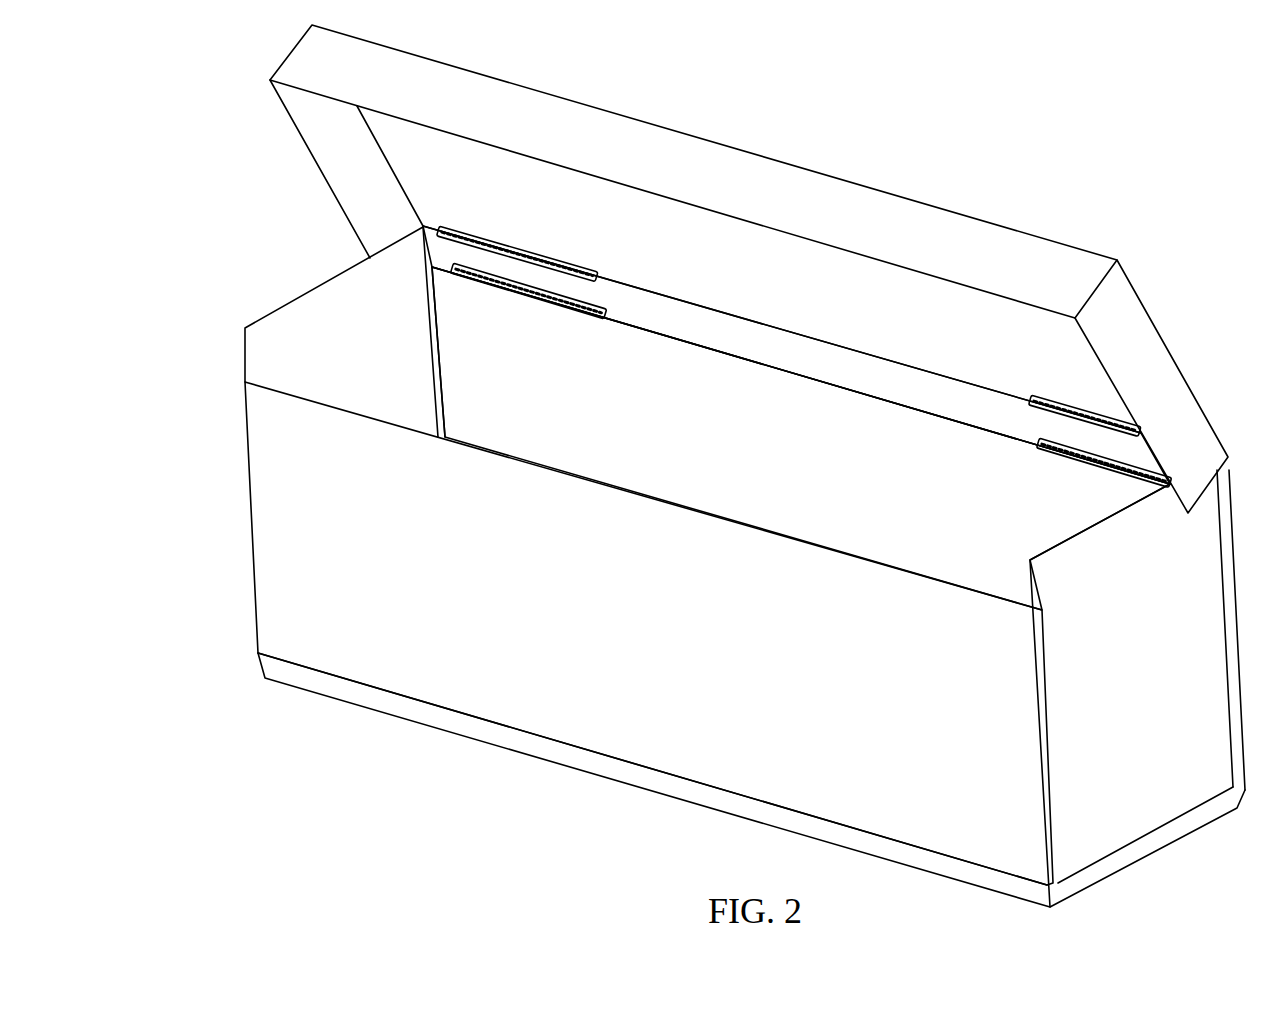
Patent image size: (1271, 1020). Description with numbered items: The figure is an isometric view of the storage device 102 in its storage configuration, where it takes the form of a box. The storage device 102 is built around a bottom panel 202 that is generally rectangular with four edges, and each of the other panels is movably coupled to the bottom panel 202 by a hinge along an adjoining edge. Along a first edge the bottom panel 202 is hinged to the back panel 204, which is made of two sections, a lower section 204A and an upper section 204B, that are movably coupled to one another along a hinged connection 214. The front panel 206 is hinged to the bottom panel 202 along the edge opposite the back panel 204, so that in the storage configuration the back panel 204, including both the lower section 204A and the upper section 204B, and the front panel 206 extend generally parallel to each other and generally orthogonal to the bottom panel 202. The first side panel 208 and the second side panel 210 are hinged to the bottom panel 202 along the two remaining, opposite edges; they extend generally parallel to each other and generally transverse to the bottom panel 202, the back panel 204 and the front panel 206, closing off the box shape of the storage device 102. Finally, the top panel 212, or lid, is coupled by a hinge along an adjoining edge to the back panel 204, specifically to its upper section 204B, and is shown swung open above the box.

The storage device 102 is at (176, 92).
The bottom panel 202 is at (430, 721).
The back panel 204 is at (742, 453).
The lower section 204A is at (938, 507).
The upper section 204B is at (796, 355).
The front panel 206 is at (677, 622).
The first side panel 208 is at (373, 382).
The second side panel 210 is at (1147, 681).
The top panel 212 is at (727, 276).
The hinged connection 214 is at (537, 304).